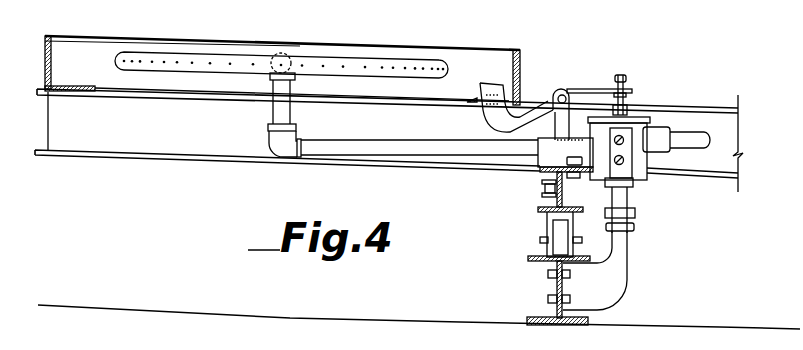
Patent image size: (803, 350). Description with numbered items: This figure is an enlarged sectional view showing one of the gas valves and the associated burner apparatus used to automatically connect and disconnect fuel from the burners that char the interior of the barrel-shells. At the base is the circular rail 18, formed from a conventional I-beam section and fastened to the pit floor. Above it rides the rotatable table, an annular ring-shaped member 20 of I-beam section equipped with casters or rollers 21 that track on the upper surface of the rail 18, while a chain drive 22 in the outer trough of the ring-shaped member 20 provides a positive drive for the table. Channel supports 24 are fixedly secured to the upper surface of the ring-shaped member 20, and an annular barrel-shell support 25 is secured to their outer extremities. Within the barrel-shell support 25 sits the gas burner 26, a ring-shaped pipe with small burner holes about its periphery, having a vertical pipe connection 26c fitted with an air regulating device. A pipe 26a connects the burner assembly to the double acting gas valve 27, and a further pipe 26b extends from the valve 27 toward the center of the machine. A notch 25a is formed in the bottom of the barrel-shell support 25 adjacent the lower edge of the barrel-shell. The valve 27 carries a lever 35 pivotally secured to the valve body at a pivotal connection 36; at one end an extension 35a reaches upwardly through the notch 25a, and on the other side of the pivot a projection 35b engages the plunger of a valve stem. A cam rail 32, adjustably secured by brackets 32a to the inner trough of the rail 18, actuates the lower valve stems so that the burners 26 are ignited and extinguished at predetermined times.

The circular rail 18 is at (537, 260).
The ring-shaped member 20 is at (538, 209).
The casters or rollers 21 is at (560, 235).
The chain drive 22 is at (542, 188).
The channel supports 24 is at (703, 108).
The barrel-shell support 25 is at (518, 60).
The notch 25a is at (517, 98).
The gas burner 26 is at (397, 60).
The pipe 26a is at (375, 141).
The pipe 26b is at (703, 140).
The vertical pipe connection 26c is at (272, 113).
The double acting gas valve 27 is at (638, 168).
The cam rail 32 is at (634, 228).
The brackets 32a is at (617, 285).
The lever 35 is at (563, 92).
The extension 35a is at (493, 80).
The projection 35b is at (630, 90).
The pivotal connection 36 is at (567, 97).